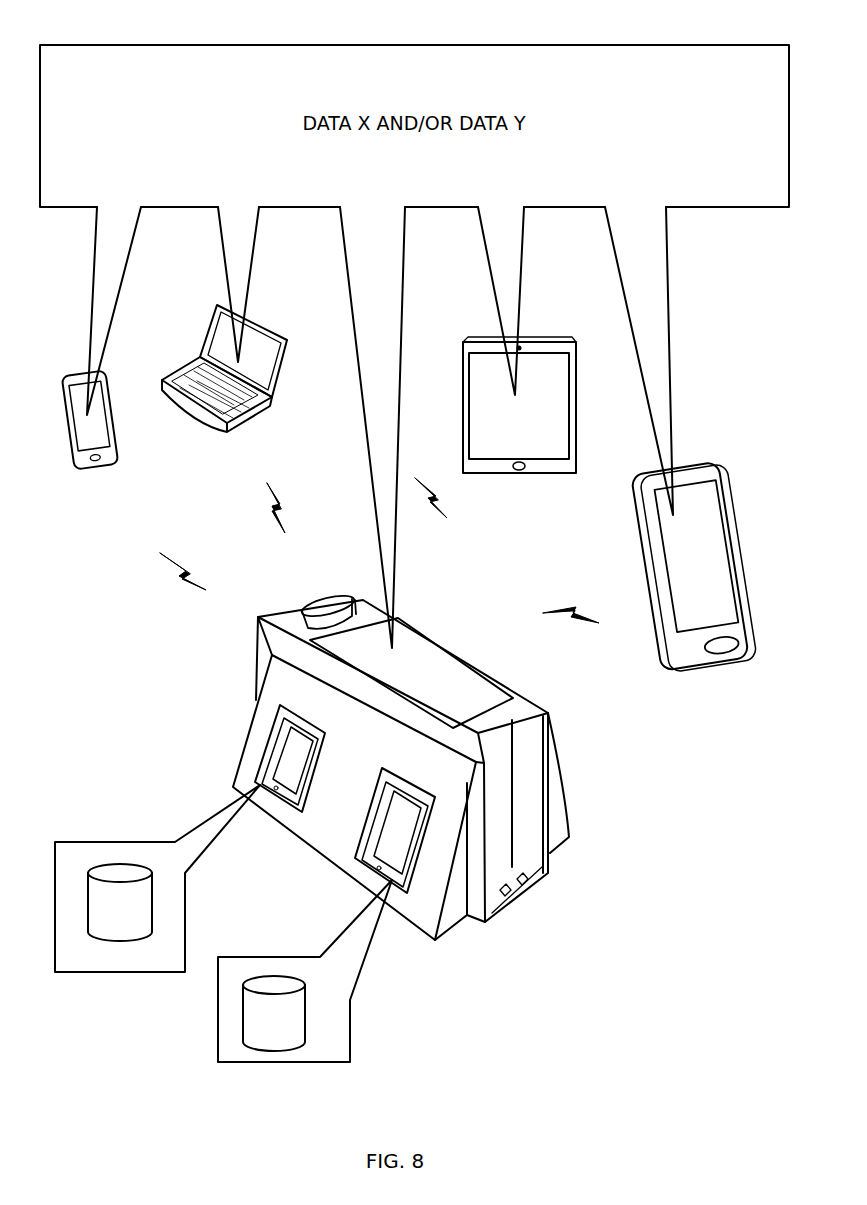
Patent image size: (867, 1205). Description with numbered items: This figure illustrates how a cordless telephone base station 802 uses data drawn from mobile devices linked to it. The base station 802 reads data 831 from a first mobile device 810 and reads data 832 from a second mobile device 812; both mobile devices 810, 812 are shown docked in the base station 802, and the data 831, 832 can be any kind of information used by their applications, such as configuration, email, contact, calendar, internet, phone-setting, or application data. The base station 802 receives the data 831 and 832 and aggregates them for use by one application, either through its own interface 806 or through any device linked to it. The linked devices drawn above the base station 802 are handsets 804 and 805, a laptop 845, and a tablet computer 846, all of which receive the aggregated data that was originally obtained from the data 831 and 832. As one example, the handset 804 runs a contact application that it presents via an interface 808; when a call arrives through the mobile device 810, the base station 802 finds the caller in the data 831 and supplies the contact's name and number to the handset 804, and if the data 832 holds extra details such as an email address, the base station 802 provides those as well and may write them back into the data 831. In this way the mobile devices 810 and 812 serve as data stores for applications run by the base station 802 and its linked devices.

The cordless telephone base station 802 is at (340, 752).
The handset 804 is at (716, 542).
The handset 805 is at (63, 373).
The interface 806 is at (422, 678).
The interface 808 is at (690, 523).
The mobile device 810 is at (227, 778).
The mobile device 812 is at (380, 843).
The data 831 is at (122, 942).
The data 832 is at (270, 1048).
The laptop 845 is at (282, 385).
The tablet computer 846 is at (550, 473).